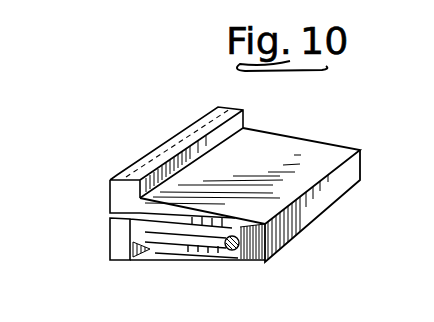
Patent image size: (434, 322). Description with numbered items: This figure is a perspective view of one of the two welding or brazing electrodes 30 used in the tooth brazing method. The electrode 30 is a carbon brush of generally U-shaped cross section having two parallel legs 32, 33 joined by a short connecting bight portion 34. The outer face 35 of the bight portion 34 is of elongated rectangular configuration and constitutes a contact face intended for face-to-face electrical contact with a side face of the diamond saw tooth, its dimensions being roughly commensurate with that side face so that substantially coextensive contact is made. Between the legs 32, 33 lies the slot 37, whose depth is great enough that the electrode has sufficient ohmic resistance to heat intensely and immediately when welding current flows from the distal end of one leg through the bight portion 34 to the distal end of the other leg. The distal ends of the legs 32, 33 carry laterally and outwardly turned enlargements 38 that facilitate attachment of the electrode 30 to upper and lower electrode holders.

The electrode 30 is at (254, 165).
The leg 32 is at (205, 208).
The leg 33 is at (193, 252).
The bight portion 34 is at (240, 250).
The outer face 35 is at (335, 188).
The slot 37 is at (182, 235).
The enlargement 38 is at (117, 239).